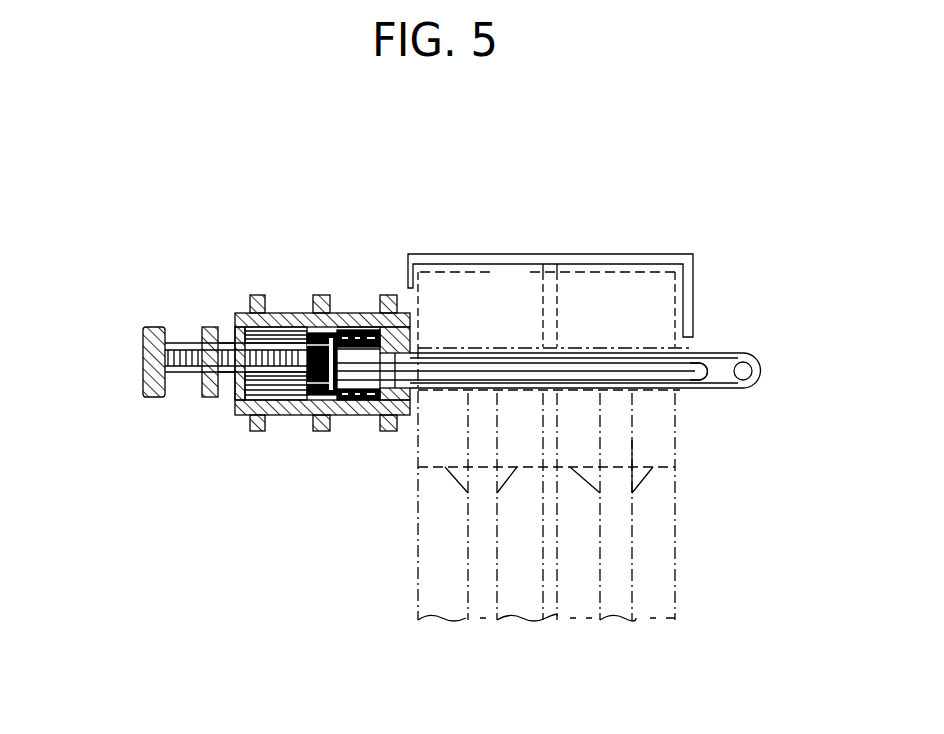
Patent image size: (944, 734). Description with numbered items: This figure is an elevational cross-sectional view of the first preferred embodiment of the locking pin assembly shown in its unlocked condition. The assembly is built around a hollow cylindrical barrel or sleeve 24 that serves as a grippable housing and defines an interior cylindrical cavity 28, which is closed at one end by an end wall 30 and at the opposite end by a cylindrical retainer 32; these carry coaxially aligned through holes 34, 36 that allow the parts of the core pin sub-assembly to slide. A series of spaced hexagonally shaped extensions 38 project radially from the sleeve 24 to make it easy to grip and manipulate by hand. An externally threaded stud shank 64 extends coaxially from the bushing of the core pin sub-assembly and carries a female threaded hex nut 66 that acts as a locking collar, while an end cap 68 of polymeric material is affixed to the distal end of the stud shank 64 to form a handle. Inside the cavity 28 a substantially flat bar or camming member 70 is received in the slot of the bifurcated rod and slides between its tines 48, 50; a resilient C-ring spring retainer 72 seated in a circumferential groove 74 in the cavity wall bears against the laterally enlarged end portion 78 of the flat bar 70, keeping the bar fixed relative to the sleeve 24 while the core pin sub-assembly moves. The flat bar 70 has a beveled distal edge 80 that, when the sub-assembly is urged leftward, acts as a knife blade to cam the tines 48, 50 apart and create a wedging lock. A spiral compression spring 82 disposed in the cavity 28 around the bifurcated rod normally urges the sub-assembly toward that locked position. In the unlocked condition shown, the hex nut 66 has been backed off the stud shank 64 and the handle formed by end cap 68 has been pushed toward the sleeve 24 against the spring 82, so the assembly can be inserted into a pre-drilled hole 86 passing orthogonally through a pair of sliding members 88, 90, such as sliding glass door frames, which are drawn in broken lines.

The sleeve 24 is at (300, 313).
The interior cylindrical cavity 28 is at (278, 313).
The end wall 30 is at (428, 347).
The cylindrical retainer 32 is at (240, 385).
The through hole 34 is at (420, 392).
The through hole 36 is at (237, 350).
The hexagonally shaped extensions 38 is at (395, 402).
The tine 48 is at (697, 340).
The tine 50 is at (657, 392).
The threaded stud shank 64 is at (203, 395).
The hex nut 66 is at (205, 398).
The end cap 68 is at (143, 369).
The flat bar 70 is at (602, 372).
The C-ring spring retainer 72 is at (345, 400).
The circumferential groove 74 is at (376, 313).
The laterally enlarged end portion 78 is at (405, 402).
The beveled distal edge 80 is at (707, 387).
The spiral compression spring 82 is at (347, 313).
The pre-drilled hole 86 is at (527, 355).
The sliding member 88 is at (497, 450).
The sliding member 90 is at (650, 442).